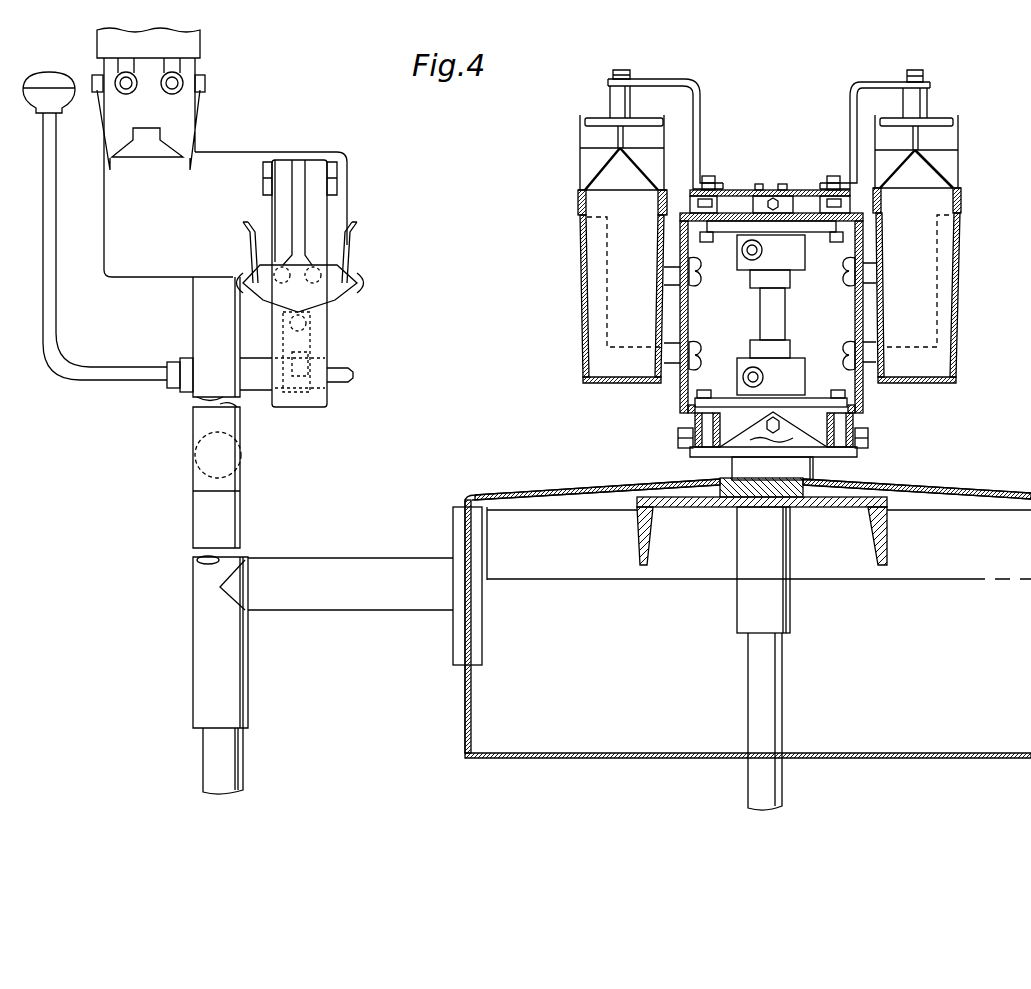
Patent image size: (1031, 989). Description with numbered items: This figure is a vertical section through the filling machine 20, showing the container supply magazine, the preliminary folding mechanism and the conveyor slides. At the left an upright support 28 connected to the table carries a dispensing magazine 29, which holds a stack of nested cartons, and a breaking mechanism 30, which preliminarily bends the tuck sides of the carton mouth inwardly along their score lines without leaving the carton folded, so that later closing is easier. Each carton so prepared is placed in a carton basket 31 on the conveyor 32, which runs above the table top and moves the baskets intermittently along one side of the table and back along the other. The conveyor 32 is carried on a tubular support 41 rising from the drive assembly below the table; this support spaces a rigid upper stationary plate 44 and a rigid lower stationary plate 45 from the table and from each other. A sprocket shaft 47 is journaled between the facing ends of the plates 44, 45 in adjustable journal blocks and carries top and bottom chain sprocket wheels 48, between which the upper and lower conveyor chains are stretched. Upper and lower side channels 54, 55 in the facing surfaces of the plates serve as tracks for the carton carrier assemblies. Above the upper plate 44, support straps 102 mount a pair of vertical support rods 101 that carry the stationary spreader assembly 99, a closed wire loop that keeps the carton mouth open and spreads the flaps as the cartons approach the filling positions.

The filling machine 20 is at (745, 99).
The upright support 28 is at (243, 518).
The dispensing magazine 29 is at (187, 104).
The breaking mechanism 30 is at (357, 290).
The carton basket 31 is at (615, 385).
The conveyor 32 is at (678, 412).
The tubular support 41 is at (790, 455).
The upper stationary plate 44 is at (840, 450).
The lower stationary plate 45 is at (800, 190).
The sprocket shaft 47 is at (787, 312).
The chain sprocket wheel 48 is at (728, 237).
The upper side channel 54 is at (722, 196).
The lower side channel 55 is at (716, 442).
The spreader assembly 99 is at (585, 128).
The vertical support rod 101 is at (610, 102).
The support strap 102 is at (636, 82).